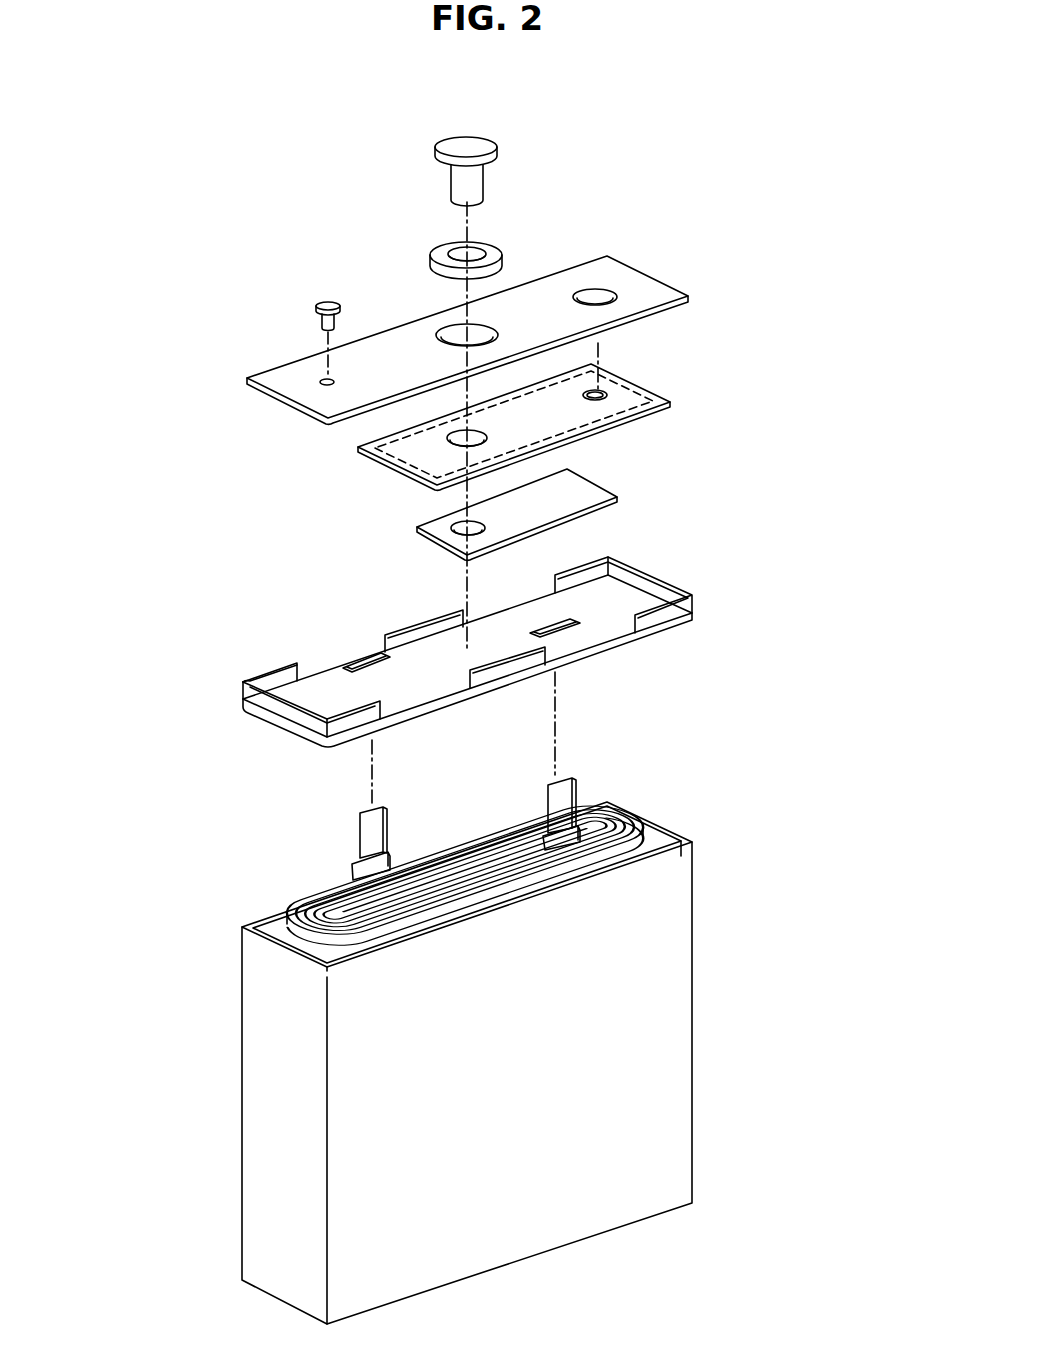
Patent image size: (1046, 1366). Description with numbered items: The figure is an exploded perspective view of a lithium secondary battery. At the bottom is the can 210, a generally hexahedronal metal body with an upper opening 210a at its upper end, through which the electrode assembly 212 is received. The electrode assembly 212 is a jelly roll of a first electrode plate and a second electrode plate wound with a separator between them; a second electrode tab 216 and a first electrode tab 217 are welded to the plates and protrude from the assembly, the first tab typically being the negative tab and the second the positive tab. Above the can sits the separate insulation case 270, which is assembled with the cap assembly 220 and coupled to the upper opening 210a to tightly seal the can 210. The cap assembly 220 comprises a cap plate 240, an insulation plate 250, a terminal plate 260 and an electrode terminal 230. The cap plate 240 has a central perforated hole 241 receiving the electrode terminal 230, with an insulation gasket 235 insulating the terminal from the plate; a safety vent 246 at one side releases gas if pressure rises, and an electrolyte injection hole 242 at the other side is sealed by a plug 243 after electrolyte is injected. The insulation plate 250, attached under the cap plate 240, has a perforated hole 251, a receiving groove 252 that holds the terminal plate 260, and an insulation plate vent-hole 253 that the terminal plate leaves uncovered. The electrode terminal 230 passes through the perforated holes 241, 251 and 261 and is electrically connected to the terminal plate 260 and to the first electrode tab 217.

The can 210 is at (542, 1063).
The upper opening 210a is at (653, 838).
The electrode assembly 212 is at (511, 826).
The second electrode tab 216 is at (373, 835).
The first electrode tab 217 is at (545, 808).
The cap assembly 220 is at (783, 133).
The electrode terminal 230 is at (480, 147).
The insulation gasket 235 is at (437, 247).
The cap plate 240 is at (493, 314).
The perforated hole 241 is at (452, 333).
The electrolyte injection hole 242 is at (325, 382).
The plug 243 is at (322, 302).
The safety vent 246 is at (600, 297).
The insulation plate 250 is at (512, 426).
The perforated hole 251 is at (450, 457).
The receiving groove 252 is at (358, 447).
The insulation plate vent-hole 253 is at (607, 393).
The terminal plate 260 is at (555, 507).
The perforated hole 261 is at (433, 542).
The insulation case 270 is at (257, 702).